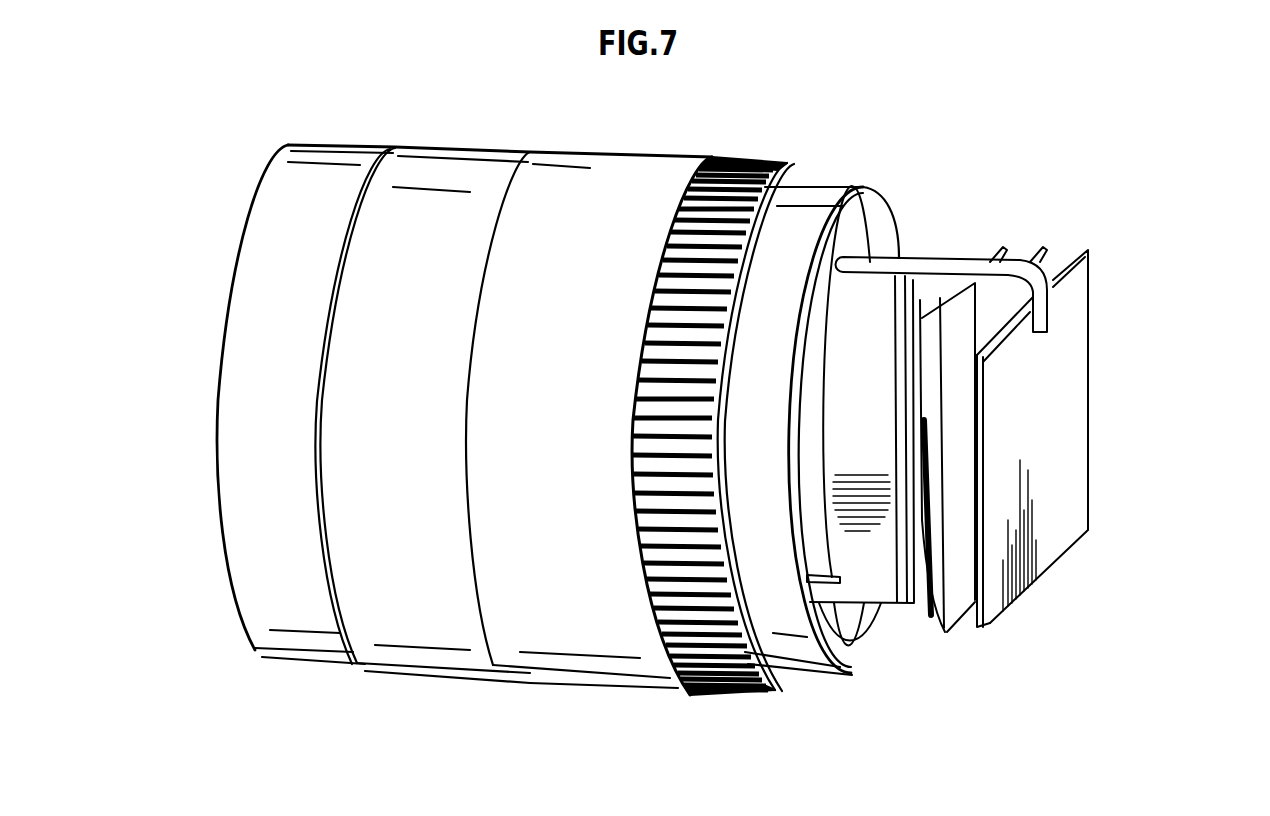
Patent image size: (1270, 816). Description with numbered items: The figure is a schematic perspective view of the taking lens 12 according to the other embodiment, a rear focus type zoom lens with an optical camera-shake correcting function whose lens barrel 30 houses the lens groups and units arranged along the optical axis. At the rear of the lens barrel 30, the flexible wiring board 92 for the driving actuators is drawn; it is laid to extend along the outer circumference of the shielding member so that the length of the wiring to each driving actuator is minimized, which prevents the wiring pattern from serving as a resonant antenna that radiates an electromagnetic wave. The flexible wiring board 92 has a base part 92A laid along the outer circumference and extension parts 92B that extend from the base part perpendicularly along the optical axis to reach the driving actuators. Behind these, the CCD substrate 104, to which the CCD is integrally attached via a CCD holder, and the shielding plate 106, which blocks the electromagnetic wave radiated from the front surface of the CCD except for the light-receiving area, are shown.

The taking lens 12 is at (522, 124).
The lens barrel 30 is at (619, 164).
The flexible wiring board 92 is at (947, 260).
The base part 92A is at (897, 600).
The extension parts 92B is at (823, 593).
The CCD substrate 104 is at (972, 580).
The shielding plate 106 is at (980, 300).